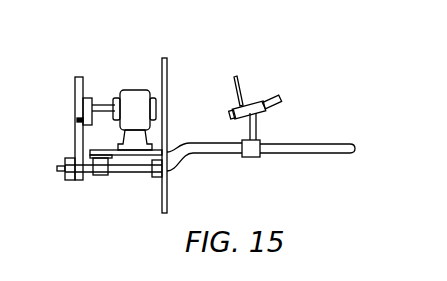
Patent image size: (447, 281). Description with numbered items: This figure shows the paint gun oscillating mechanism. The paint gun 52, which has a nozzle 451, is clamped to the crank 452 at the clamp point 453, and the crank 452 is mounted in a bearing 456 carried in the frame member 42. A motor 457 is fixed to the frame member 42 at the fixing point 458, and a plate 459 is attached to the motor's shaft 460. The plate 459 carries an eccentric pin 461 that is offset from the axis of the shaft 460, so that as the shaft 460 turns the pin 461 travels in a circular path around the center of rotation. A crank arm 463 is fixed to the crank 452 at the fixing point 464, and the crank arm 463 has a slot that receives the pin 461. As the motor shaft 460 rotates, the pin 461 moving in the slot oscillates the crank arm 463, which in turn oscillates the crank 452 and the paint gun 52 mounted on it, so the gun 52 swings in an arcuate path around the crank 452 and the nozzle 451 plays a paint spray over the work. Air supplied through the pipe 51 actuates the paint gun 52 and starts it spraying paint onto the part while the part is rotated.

The frame member 42 is at (167, 85).
The pipe 51 is at (242, 84).
The paint gun 52 is at (254, 105).
The nozzle 451 is at (281, 103).
The crank 452 is at (190, 151).
The clamp point 453 is at (252, 157).
The bearing 456 is at (158, 176).
The motor 457 is at (134, 120).
The motor fixing point 458 is at (164, 147).
The plate 459 is at (84, 98).
The shaft 460 is at (99, 105).
The eccentric pin 461 is at (76, 122).
The crank arm 463 is at (74, 138).
The crank arm fixing point 464 is at (67, 180).